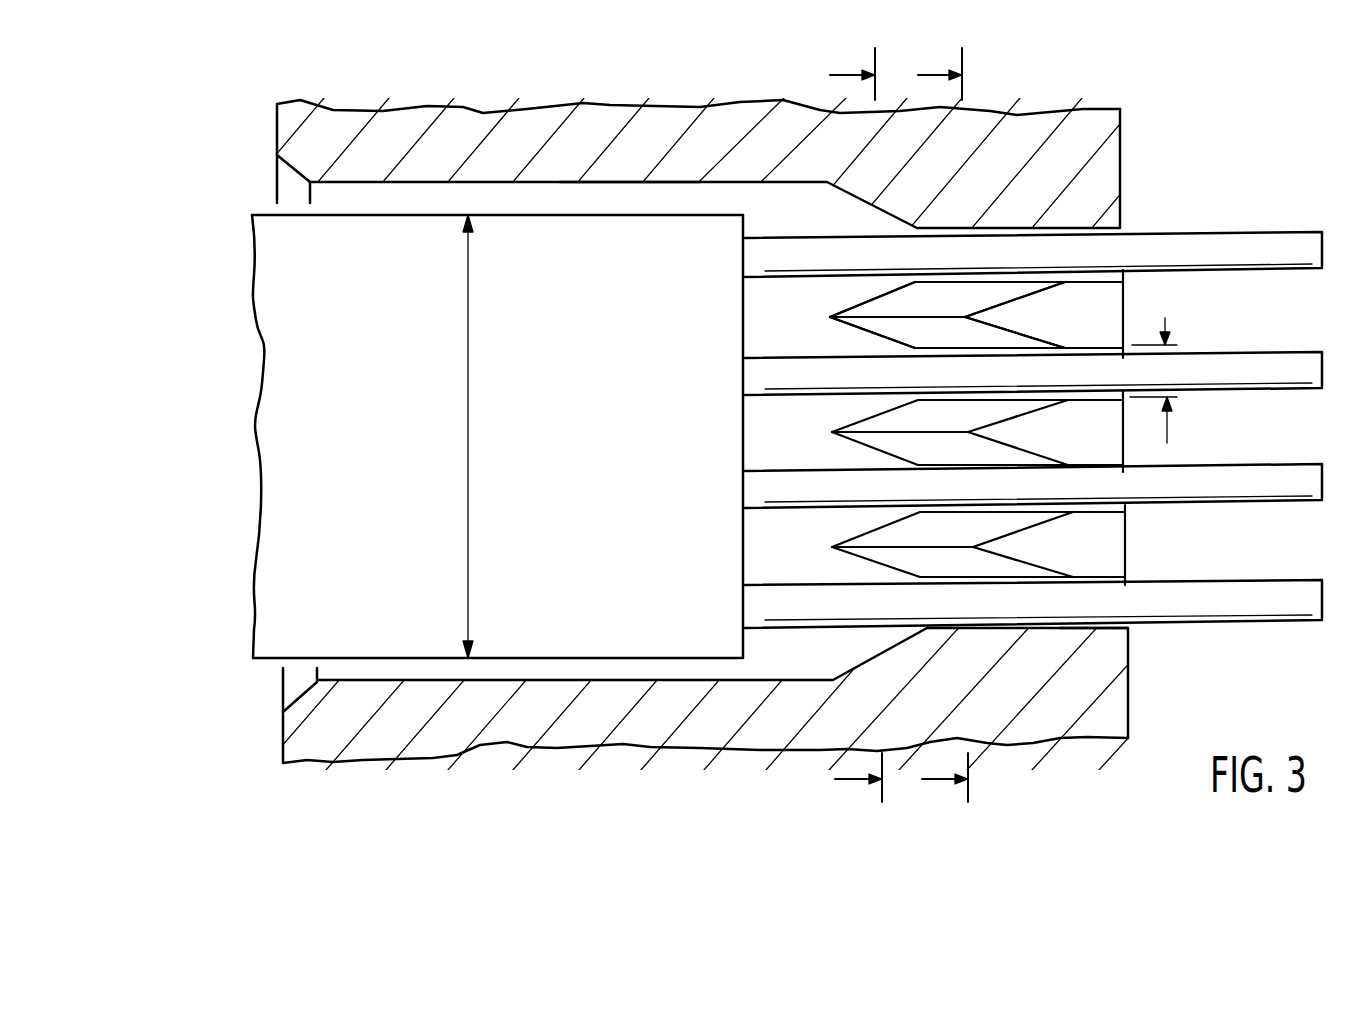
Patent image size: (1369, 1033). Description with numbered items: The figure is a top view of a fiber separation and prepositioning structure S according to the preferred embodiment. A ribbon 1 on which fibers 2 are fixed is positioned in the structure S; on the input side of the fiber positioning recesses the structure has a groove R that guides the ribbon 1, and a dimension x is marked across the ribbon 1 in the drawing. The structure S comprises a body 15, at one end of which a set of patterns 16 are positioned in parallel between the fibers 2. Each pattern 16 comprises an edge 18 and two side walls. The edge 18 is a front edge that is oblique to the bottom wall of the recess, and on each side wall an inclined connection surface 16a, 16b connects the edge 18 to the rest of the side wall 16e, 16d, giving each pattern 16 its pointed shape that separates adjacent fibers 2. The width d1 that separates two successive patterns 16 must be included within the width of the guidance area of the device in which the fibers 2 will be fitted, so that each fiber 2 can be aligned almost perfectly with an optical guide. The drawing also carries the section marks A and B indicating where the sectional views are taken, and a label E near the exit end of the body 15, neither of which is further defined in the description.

The ribbon 1 is at (293, 573).
The fibers 2 is at (1257, 240).
The body 15 is at (1043, 127).
The pattern 16 is at (1138, 301).
The inclined connection surface 16a is at (927, 298).
The inclined connection surface 16b is at (930, 343).
The side wall 16d is at (1090, 350).
The side wall 16e is at (1068, 282).
The edge 18 is at (872, 321).
The structure S is at (490, 98).
The groove R is at (606, 200).
The edge E is at (1108, 628).
The block width dimension x is at (482, 436).
The width d1 is at (1174, 420).
The section line A is at (943, 427).
The section line B is at (856, 428).